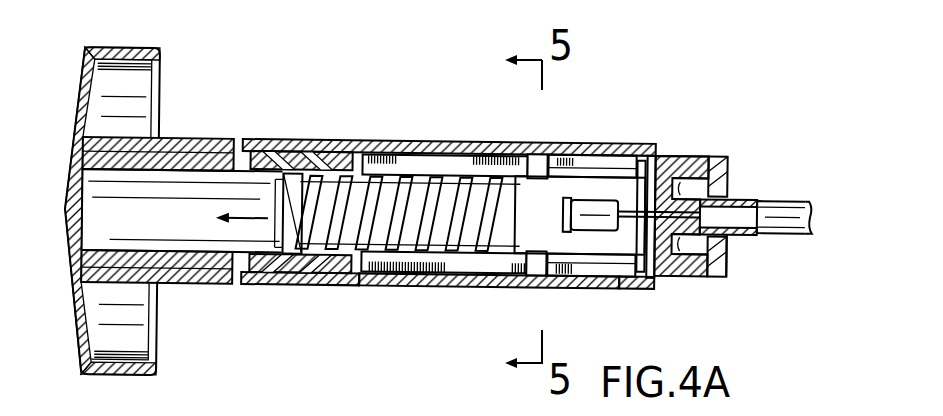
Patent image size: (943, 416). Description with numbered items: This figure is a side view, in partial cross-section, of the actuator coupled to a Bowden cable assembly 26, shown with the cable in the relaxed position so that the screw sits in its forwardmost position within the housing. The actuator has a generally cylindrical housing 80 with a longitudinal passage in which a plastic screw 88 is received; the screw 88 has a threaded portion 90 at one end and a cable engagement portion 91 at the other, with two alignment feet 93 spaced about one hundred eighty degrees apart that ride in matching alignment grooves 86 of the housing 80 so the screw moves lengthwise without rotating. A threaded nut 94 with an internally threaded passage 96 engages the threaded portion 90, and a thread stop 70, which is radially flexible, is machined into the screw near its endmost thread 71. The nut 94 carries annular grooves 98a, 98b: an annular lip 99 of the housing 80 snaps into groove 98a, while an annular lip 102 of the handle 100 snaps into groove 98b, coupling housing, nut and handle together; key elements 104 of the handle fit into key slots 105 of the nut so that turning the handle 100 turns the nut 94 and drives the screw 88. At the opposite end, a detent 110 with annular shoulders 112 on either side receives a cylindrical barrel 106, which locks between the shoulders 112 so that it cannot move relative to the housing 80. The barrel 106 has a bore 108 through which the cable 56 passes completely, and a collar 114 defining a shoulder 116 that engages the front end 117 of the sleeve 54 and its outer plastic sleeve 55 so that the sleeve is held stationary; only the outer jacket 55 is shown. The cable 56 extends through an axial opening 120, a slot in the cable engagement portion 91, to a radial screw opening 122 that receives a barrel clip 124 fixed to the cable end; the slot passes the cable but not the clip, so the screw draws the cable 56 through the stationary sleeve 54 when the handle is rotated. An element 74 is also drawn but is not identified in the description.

The handle 100 is at (110, 48).
The annular lip 102 is at (220, 150).
The annular lip 99 is at (245, 140).
The threaded nut 94 is at (291, 158).
The endmost thread 71 is at (315, 150).
The alignment grooves 86 is at (412, 158).
The housing 80 is at (440, 144).
The sleeve thread portion 74 is at (468, 150).
The alignment feet 93 is at (540, 152).
The cable engagement portion 91 is at (590, 145).
The barrel 106 is at (667, 151).
The detent 110 is at (683, 152).
The front end 117 is at (730, 162).
The bore 108 is at (740, 185).
The Bowden cable assembly 26 is at (812, 194).
The sleeve 54 is at (812, 204).
The internally threaded passage 96 is at (92, 204).
The key elements 104 is at (148, 176).
The key slots 105 is at (196, 250).
The radial screw opening 122 is at (562, 213).
The shoulder 116 is at (655, 195).
The collar 114 is at (747, 230).
The outer sleeve 55 is at (733, 230).
The annular groove 98b is at (213, 285).
The annular groove 98a is at (247, 285).
The thread stop 70 is at (295, 255).
The threaded portion 90 is at (395, 266).
The screw 88 is at (480, 258).
The barrel clip 124 is at (598, 283).
The axial opening 120 is at (648, 270).
The cable 56 is at (643, 280).
The annular shoulders 112 is at (700, 277).